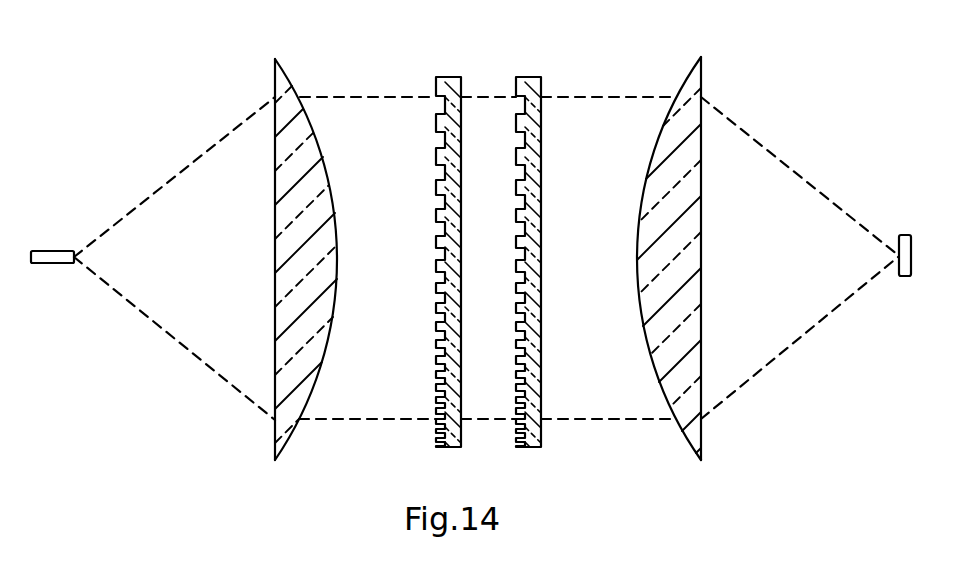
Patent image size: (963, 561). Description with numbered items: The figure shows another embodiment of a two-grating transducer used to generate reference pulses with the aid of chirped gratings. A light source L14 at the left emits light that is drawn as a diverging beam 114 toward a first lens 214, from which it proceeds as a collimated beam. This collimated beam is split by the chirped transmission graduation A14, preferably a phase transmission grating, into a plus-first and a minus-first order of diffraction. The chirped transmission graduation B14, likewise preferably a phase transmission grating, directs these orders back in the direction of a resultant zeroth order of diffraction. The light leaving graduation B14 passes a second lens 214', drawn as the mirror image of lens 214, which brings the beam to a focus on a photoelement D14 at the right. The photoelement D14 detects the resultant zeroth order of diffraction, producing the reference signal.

The light source L14 is at (50, 250).
The chirped transmission graduation A14 is at (447, 78).
The chirped transmission graduation B14 is at (531, 77).
The photoelement D14 is at (905, 233).
The light beam 114 is at (185, 362).
The collimating lens 214 is at (261, 259).
The focusing lens 214' is at (656, 268).